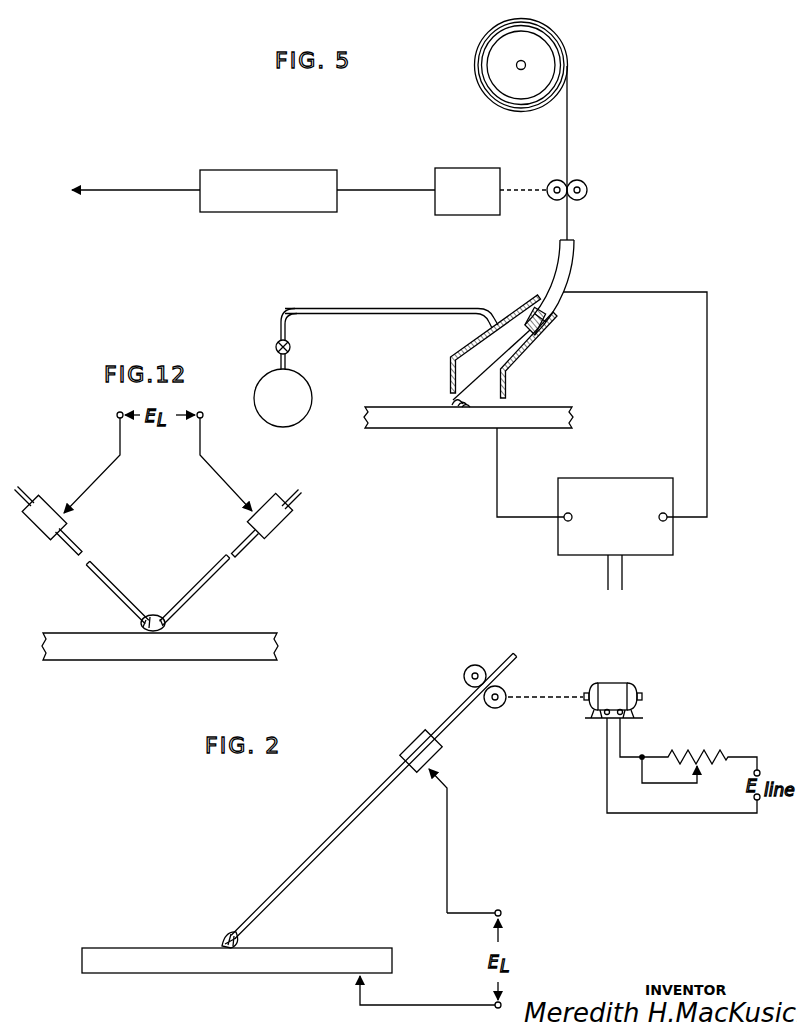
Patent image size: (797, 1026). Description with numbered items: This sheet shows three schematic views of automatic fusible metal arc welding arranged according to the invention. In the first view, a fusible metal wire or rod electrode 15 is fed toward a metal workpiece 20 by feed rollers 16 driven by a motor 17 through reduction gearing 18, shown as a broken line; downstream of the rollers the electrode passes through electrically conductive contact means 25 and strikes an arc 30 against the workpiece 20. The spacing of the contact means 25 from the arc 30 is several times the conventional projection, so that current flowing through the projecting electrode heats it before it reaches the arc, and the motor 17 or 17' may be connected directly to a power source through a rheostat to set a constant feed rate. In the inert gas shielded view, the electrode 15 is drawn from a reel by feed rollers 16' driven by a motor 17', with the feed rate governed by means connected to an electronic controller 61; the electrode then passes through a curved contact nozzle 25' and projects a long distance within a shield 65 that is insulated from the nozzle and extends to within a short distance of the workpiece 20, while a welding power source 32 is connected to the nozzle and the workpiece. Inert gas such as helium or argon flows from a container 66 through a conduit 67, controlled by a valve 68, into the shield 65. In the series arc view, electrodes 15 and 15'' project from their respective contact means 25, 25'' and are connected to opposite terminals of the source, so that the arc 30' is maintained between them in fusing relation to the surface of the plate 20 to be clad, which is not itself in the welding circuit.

In FIG. 5, the fusible metal wire or rod electrode 15 is at (532, 233).
In FIG. 12, the fusible metal wire or rod electrode 15 is at (102, 574).
In FIG. 2, the fusible metal wire or rod electrode 15 is at (374, 796).
In FIG. 12, the second electrode 15'' is at (220, 577).
In FIG. 2, the feed rollers 16 is at (482, 661).
In FIG. 5, the feed rollers 16' is at (585, 188).
In FIG. 2, the motor 17 is at (613, 684).
In FIG. 5, the motor 17' is at (467, 175).
In FIG. 2, the reduction gearing 18 is at (549, 697).
In FIG. 5, the metal workpiece 20 is at (457, 426).
In FIG. 12, the metal workpiece 20 is at (128, 650).
In FIG. 2, the metal workpiece 20 is at (240, 962).
In FIG. 12, the contact means 25 is at (41, 497).
In FIG. 2, the contact means 25 is at (417, 737).
In FIG. 5, the contact nozzle 25' is at (575, 287).
In FIG. 12, the contact means 25'' is at (290, 514).
In FIG. 5, the arc 30 is at (442, 382).
In FIG. 2, the arc 30 is at (213, 930).
In FIG. 12, the arc 30' is at (154, 607).
In FIG. 5, the power source 32 is at (607, 490).
In FIG. 5, the electronic controller 61 is at (265, 190).
In FIG. 5, the shield 65 is at (529, 298).
In FIG. 5, the container 66 is at (306, 388).
In FIG. 5, the conduit 67 is at (404, 310).
In FIG. 5, the valve 68 is at (291, 348).